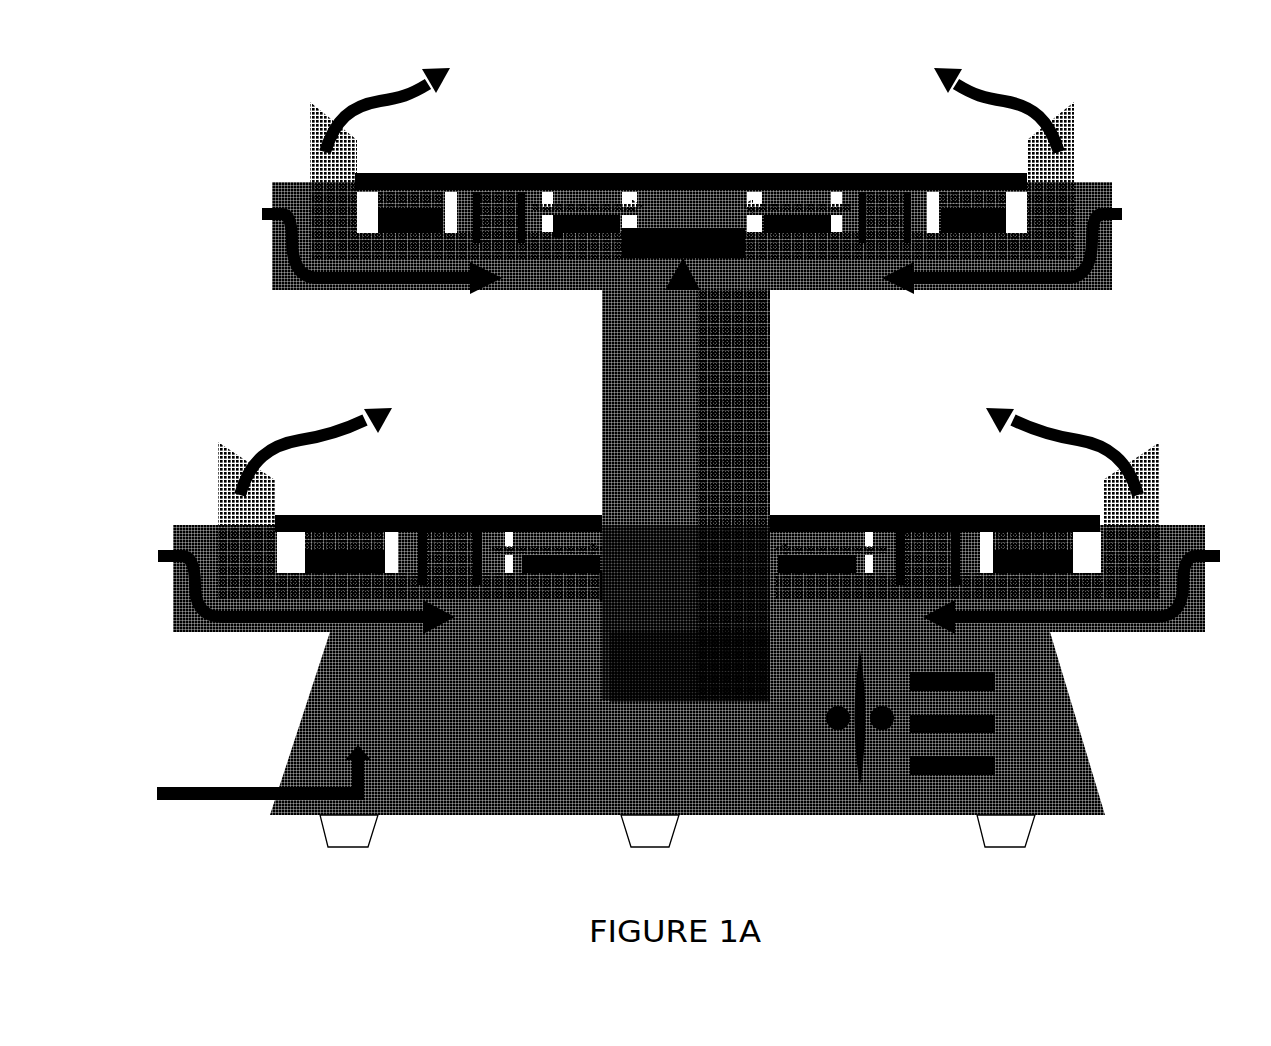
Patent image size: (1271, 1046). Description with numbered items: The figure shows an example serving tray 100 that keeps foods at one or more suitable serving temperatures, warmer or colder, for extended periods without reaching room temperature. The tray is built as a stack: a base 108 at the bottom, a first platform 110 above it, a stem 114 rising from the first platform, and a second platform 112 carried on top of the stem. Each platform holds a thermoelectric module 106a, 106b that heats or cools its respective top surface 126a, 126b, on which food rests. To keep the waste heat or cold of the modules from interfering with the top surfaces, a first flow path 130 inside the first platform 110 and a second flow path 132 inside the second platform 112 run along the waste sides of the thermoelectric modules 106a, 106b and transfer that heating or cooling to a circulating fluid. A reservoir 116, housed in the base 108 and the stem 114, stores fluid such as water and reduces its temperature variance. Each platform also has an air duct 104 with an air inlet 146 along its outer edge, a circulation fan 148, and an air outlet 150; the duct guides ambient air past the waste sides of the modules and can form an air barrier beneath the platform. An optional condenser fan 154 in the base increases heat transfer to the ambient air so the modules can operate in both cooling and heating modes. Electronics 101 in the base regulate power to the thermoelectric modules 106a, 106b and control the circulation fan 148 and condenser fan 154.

The serving tray 100 is at (180, 138).
The electronics 101 is at (517, 745).
The air duct 104 is at (884, 292).
The thermoelectric module 106a is at (555, 530).
The thermoelectric module 106b is at (583, 192).
The base 108 is at (300, 728).
The first platform 110 is at (156, 640).
The second platform 112 is at (258, 298).
The stem 114 is at (602, 392).
The reservoir 116 is at (656, 708).
The top surface 126a is at (830, 515).
The top surface 126b is at (752, 182).
The first flow path 130 is at (580, 576).
The second flow path 132 is at (580, 240).
The air inlet 146 is at (262, 215).
The circulation fan 148 is at (731, 258).
The air outlet 150 is at (328, 124).
The condenser fan 154 is at (850, 752).